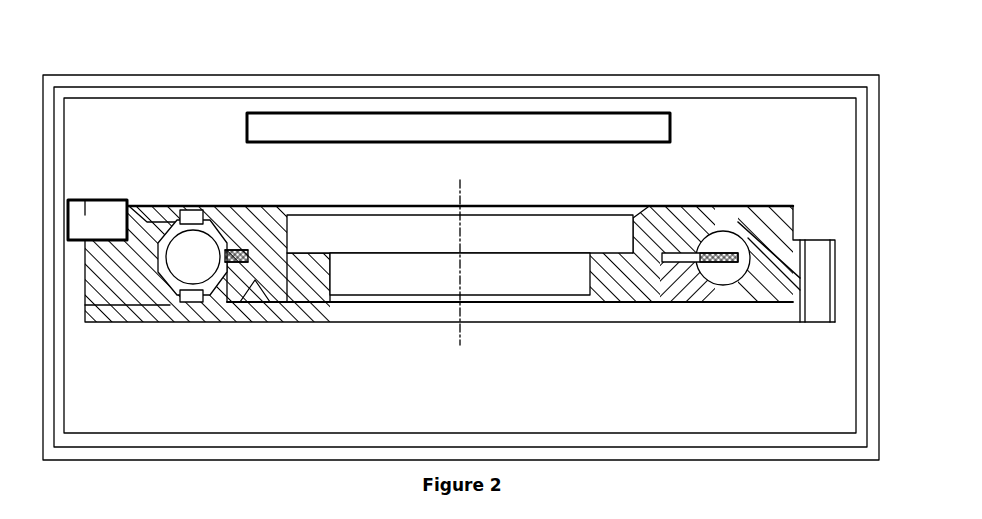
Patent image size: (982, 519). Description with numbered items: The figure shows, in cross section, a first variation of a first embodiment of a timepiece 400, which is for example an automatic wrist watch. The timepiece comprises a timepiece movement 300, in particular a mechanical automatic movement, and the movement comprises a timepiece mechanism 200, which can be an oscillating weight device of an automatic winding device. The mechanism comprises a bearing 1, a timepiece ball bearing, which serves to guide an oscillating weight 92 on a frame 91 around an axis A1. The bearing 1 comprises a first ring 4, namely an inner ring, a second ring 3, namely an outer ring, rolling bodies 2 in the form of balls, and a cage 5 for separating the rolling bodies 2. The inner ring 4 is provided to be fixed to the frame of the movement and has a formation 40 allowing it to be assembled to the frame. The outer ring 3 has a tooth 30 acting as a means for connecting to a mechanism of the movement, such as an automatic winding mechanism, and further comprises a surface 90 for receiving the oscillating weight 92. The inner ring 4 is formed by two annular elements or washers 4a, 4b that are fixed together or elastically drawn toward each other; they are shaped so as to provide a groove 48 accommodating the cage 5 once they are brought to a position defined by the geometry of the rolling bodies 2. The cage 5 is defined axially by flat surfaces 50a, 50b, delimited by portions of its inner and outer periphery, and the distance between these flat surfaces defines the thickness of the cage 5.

The bearing 1 is at (332, 204).
The rolling bodies 2 is at (197, 254).
The second ring 3 is at (103, 312).
The first ring 4 is at (690, 204).
The annular element 4a is at (306, 283).
The annular element 4b is at (214, 285).
The cage 5 is at (743, 287).
The tooth 30 is at (820, 239).
The formation 40 is at (528, 239).
The groove 48 is at (259, 249).
The flat surface 50a is at (237, 248).
The flat surface 50b is at (237, 264).
The surface 90 is at (106, 238).
The frame 91 is at (272, 130).
The oscillating weight 92 is at (85, 215).
The timepiece mechanism 200 is at (655, 97).
The timepiece movement 300 is at (706, 86).
The timepiece 400 is at (753, 74).
The axis A1 is at (458, 190).